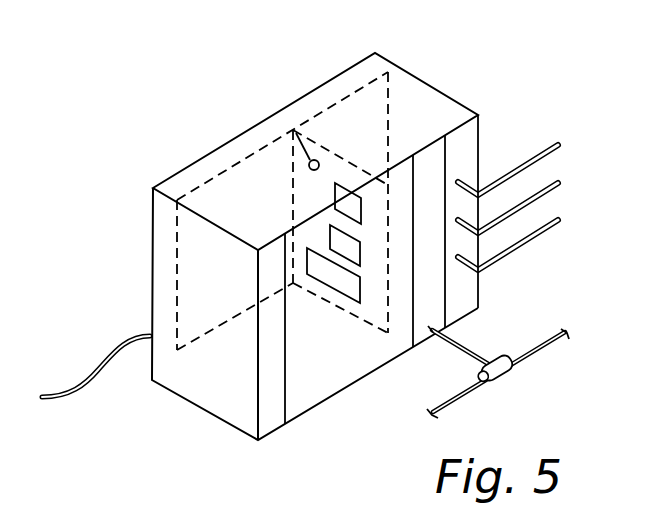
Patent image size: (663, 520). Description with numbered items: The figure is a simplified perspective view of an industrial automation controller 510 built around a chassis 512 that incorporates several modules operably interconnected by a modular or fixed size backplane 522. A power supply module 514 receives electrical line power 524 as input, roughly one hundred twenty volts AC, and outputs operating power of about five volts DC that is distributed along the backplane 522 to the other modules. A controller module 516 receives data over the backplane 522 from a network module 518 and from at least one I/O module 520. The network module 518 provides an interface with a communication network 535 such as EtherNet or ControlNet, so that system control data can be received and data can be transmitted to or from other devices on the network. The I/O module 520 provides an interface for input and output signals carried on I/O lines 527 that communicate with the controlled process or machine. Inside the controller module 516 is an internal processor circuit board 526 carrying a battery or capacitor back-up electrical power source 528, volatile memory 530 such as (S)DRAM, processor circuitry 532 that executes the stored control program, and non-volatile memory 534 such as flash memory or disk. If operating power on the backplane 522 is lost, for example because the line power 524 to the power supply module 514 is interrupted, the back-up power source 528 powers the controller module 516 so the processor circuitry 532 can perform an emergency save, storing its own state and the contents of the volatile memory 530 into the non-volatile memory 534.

The industrial automation controller 510 is at (455, 74).
The chassis 512 is at (316, 88).
The power supply module 514 is at (270, 410).
The controller module 516 is at (322, 383).
The network module 518 is at (432, 168).
The I/O module 520 is at (458, 303).
The backplane 522 is at (193, 187).
The electrical line power 524 is at (108, 352).
The internal processor circuit board 526 is at (313, 140).
The I/O lines 527 is at (523, 248).
The back-up electrical power source 528 is at (296, 133).
The volatile memory 530 is at (351, 192).
The processor circuitry 532 is at (323, 283).
The non-volatile memory 534 is at (335, 222).
The communication network 535 is at (534, 357).